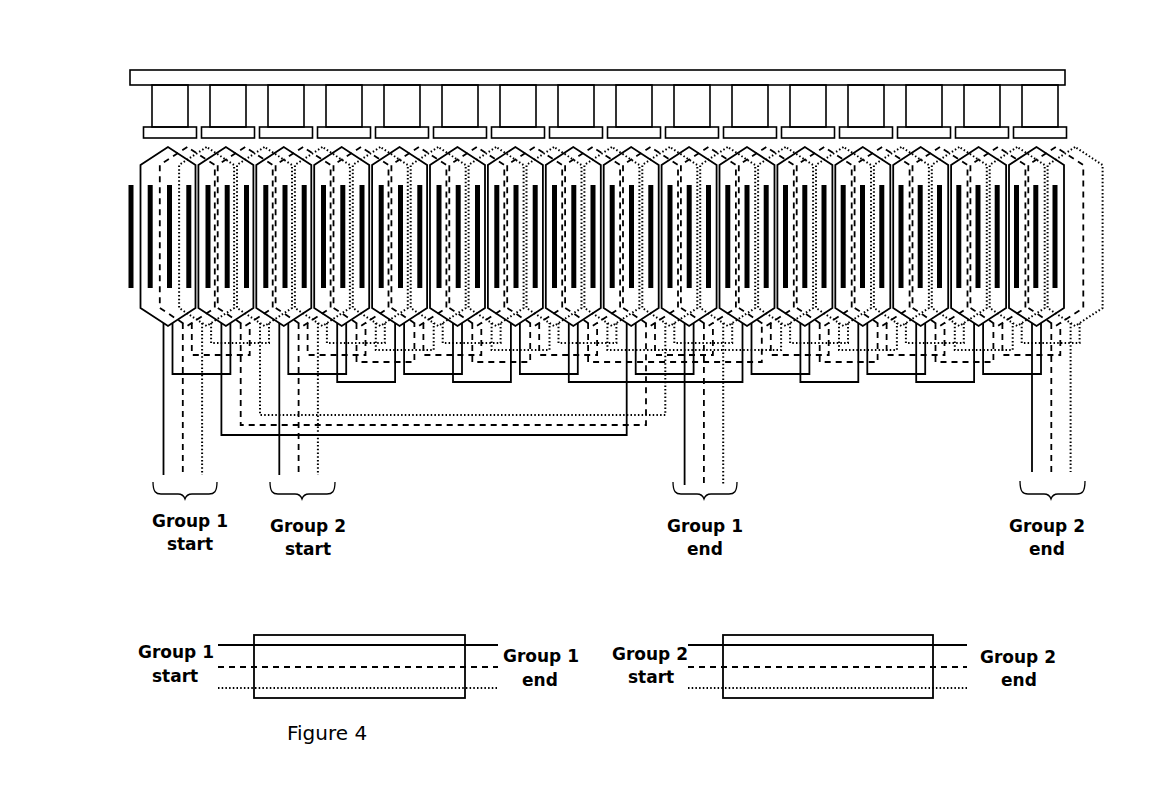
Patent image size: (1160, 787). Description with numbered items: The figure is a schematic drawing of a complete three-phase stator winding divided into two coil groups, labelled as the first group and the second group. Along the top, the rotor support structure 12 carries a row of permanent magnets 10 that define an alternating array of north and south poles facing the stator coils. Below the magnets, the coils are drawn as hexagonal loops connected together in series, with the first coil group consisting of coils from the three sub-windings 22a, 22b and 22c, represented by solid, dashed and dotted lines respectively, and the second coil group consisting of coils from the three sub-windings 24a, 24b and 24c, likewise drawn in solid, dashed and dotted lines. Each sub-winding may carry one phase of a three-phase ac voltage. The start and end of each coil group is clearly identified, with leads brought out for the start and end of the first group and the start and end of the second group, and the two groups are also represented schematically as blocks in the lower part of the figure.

The permanent magnets 10 is at (625, 100).
The rotor support structure 12 is at (935, 78).
The sub-winding 22a is at (683, 446).
The sub-winding 22b is at (705, 466).
The sub-winding 22c is at (727, 431).
The sub-winding 24a is at (1031, 435).
The sub-winding 24b is at (1052, 453).
The sub-winding 24c is at (1072, 405).